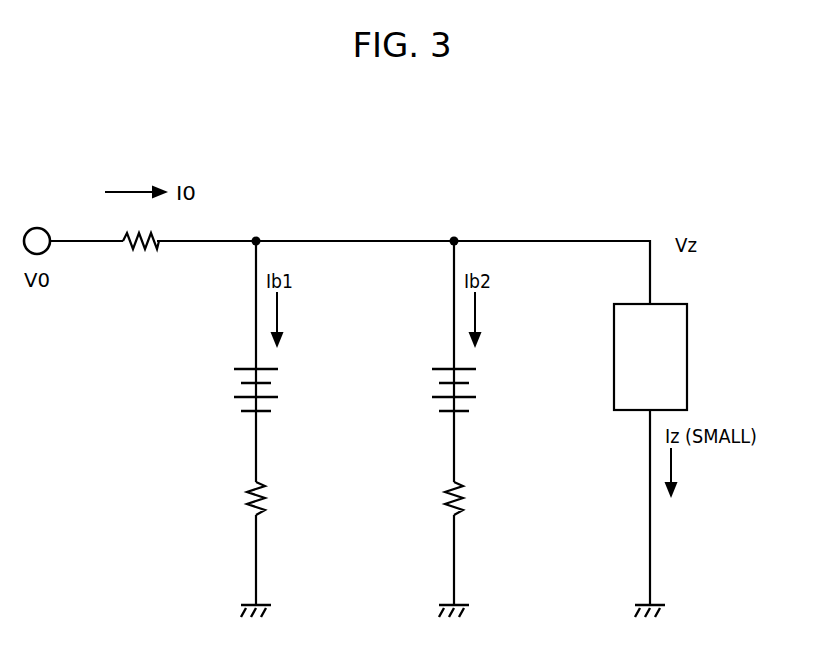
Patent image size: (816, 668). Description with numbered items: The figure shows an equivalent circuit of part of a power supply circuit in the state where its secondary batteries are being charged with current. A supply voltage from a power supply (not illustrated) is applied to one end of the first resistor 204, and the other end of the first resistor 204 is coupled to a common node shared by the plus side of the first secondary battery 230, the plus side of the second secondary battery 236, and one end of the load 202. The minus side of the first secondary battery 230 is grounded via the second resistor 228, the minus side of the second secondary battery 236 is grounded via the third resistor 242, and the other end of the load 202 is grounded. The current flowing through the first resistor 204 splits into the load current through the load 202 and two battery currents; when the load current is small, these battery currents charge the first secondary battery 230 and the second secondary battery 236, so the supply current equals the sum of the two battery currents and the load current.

The resistor (R0) 204 is at (153, 237).
The secondary battery (BT1) 230 is at (283, 388).
The secondary battery (BT2) 236 is at (481, 388).
The resistor (R7) 228 is at (259, 514).
The resistor (R8) 242 is at (457, 514).
The load 202 is at (687, 356).